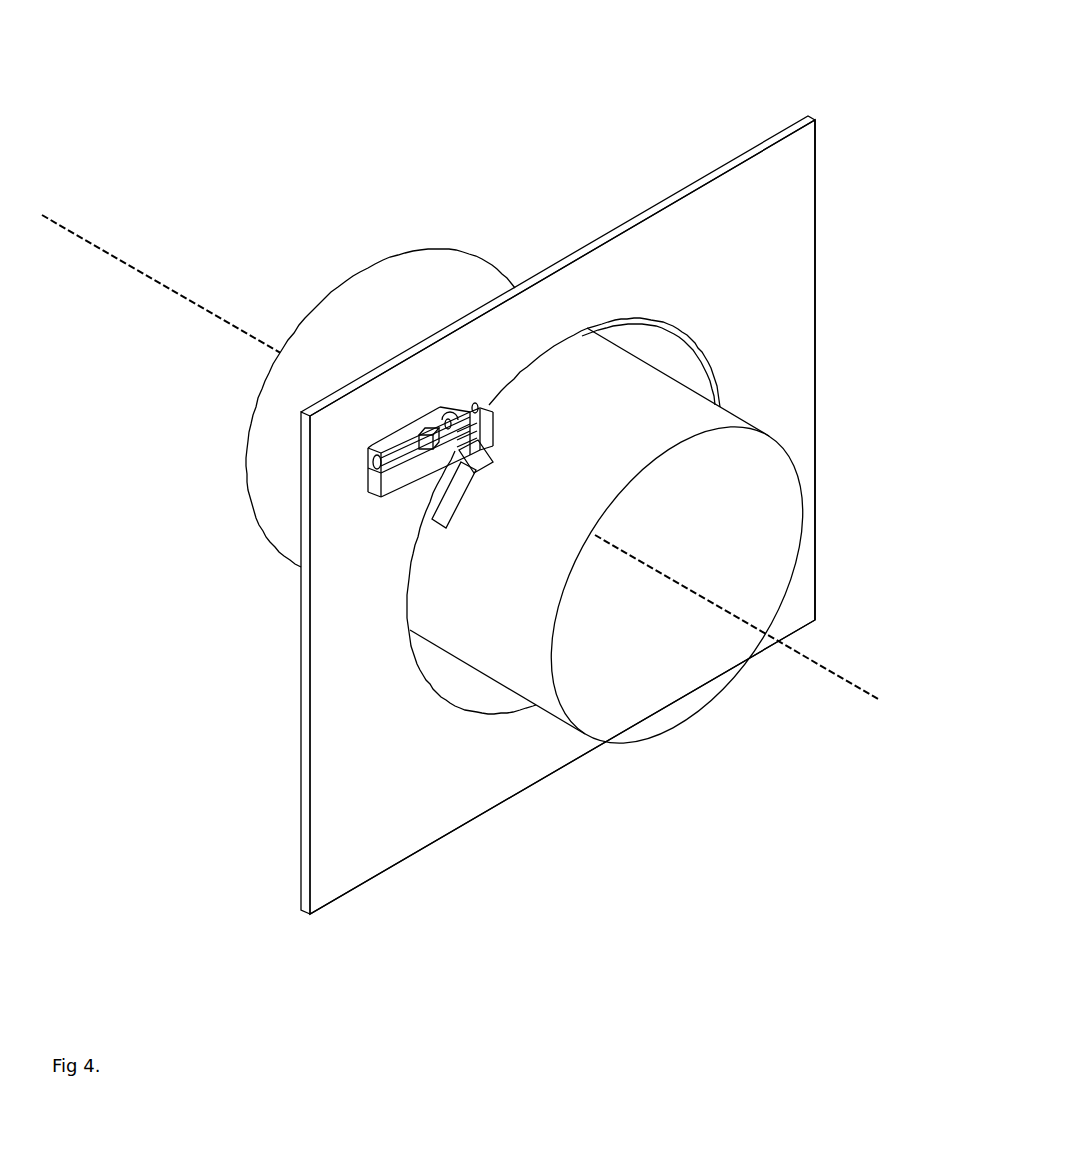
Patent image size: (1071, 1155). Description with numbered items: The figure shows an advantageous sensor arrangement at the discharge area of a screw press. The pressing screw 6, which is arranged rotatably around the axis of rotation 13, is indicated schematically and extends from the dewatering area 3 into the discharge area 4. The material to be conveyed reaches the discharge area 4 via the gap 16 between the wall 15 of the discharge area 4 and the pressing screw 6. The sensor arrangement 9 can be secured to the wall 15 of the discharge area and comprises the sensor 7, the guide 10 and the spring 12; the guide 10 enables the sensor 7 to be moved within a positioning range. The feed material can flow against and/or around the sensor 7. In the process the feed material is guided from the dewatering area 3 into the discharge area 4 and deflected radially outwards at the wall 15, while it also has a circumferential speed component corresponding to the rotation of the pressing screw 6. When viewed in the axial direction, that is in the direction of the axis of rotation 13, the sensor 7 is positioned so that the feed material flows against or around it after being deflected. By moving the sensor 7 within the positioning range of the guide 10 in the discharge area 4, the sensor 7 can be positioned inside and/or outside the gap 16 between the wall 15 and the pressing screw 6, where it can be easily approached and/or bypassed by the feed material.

The dewatering area 3 is at (268, 648).
The discharge area 4 is at (838, 272).
The pressing screw 6 is at (347, 370).
The sensor 7 is at (473, 473).
The sensor arrangement 9 is at (355, 485).
The guide 10 is at (472, 404).
The spring 12 is at (396, 452).
The axis of rotation 13 is at (124, 243).
The wall of the discharge area 15 is at (378, 770).
The gap 16 is at (655, 342).